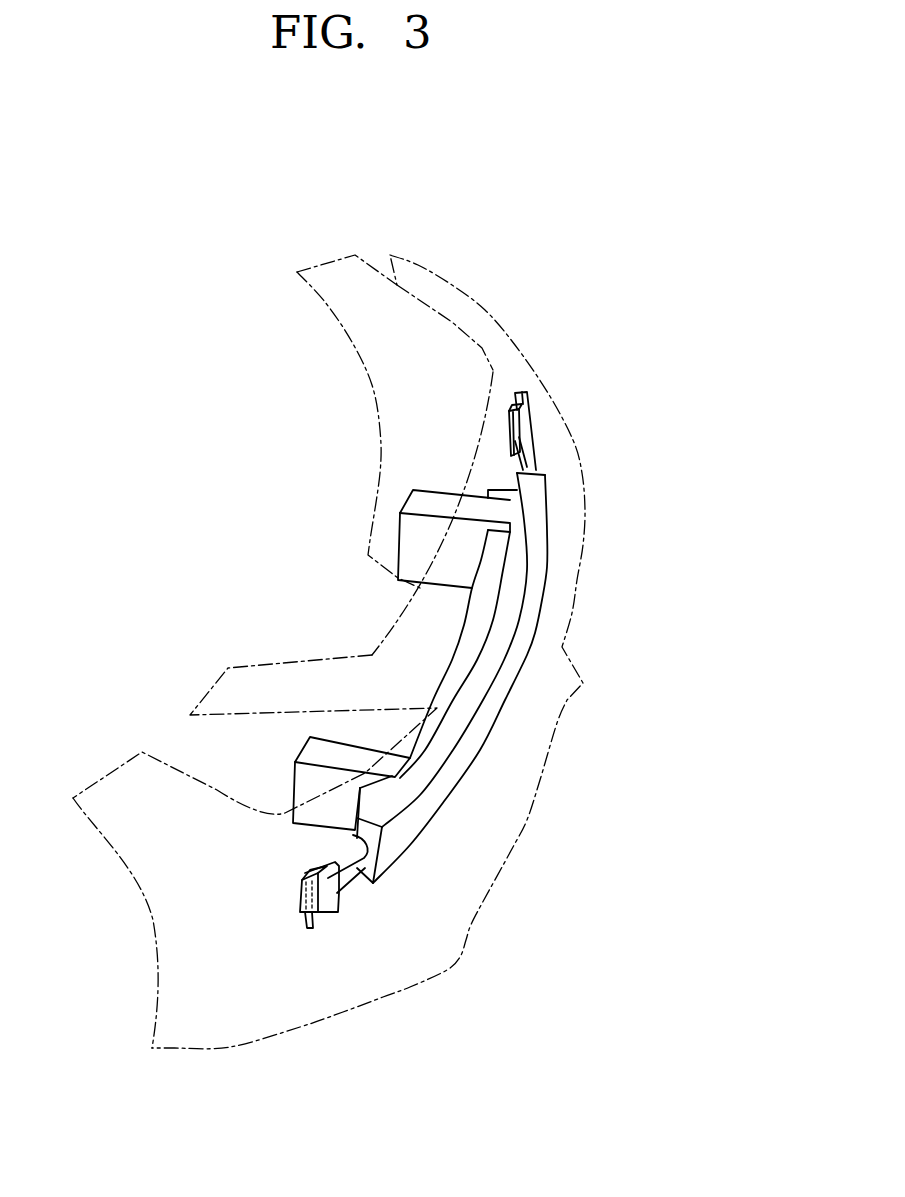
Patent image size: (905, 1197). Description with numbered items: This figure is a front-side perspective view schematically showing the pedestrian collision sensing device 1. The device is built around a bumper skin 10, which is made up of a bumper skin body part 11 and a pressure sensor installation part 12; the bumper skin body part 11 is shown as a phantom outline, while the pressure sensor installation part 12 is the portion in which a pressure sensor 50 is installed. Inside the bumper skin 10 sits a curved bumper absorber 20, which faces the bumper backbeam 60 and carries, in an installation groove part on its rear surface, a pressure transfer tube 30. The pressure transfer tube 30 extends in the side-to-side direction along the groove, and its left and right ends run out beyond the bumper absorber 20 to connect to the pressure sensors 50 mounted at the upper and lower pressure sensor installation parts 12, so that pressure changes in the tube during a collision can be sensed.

The pedestrian collision sensing device 1 is at (605, 234).
The bumper skin 10 is at (587, 503).
The bumper skin body part 11 is at (570, 547).
The pressure sensor installation part 12 is at (530, 413).
The bumper absorber 20 is at (490, 715).
The pressure transfer tube 30 is at (380, 880).
The pressure sensor 50 is at (510, 414).
The bumper backbeam 60 is at (442, 670).